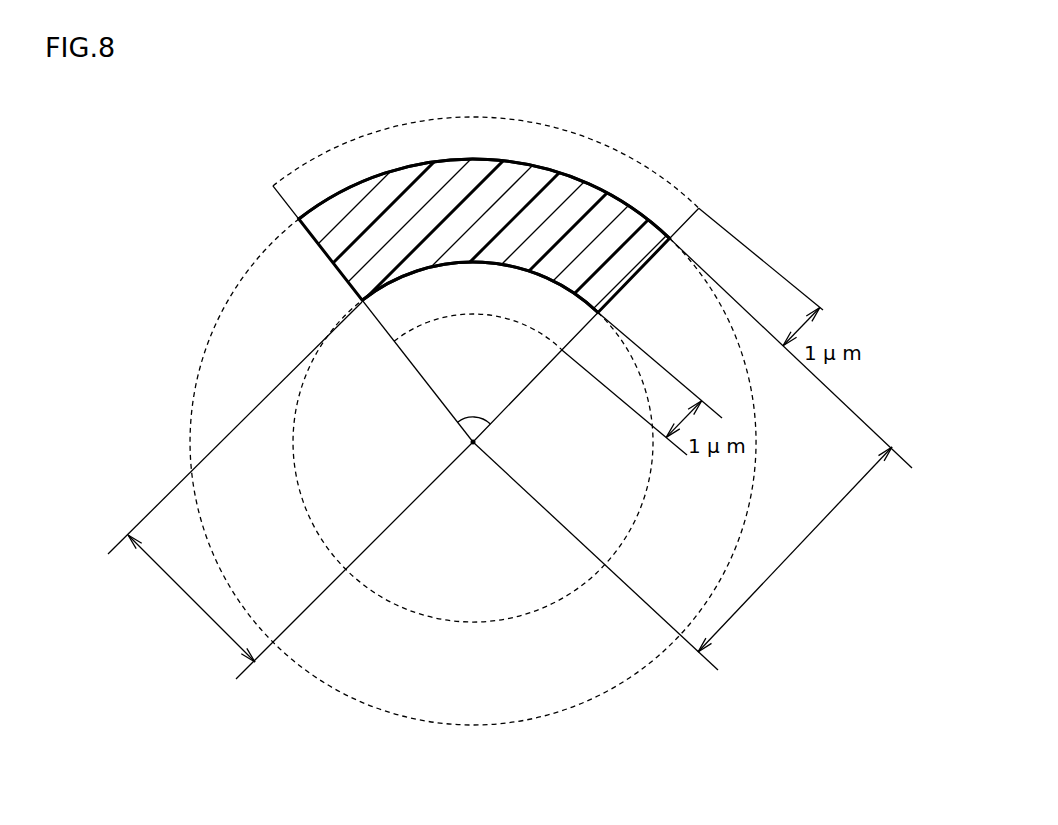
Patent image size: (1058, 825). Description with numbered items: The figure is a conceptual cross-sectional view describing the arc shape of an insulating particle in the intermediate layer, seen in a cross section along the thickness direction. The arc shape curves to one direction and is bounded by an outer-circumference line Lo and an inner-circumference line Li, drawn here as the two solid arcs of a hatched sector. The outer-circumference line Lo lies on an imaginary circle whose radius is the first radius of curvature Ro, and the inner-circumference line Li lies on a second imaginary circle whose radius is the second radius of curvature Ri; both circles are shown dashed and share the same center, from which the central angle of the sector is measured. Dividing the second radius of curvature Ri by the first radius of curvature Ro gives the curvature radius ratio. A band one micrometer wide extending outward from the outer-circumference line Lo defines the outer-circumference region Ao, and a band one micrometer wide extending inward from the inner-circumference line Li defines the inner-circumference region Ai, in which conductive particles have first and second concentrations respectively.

The outer-circumference line Lo is at (403, 165).
The inner-circumference line Li is at (549, 268).
The outer-circumference region Ao is at (482, 233).
The inner-circumference region Ai is at (478, 311).
The first radius of curvature Ro is at (541, 472).
The second radius of curvature Ri is at (390, 481).